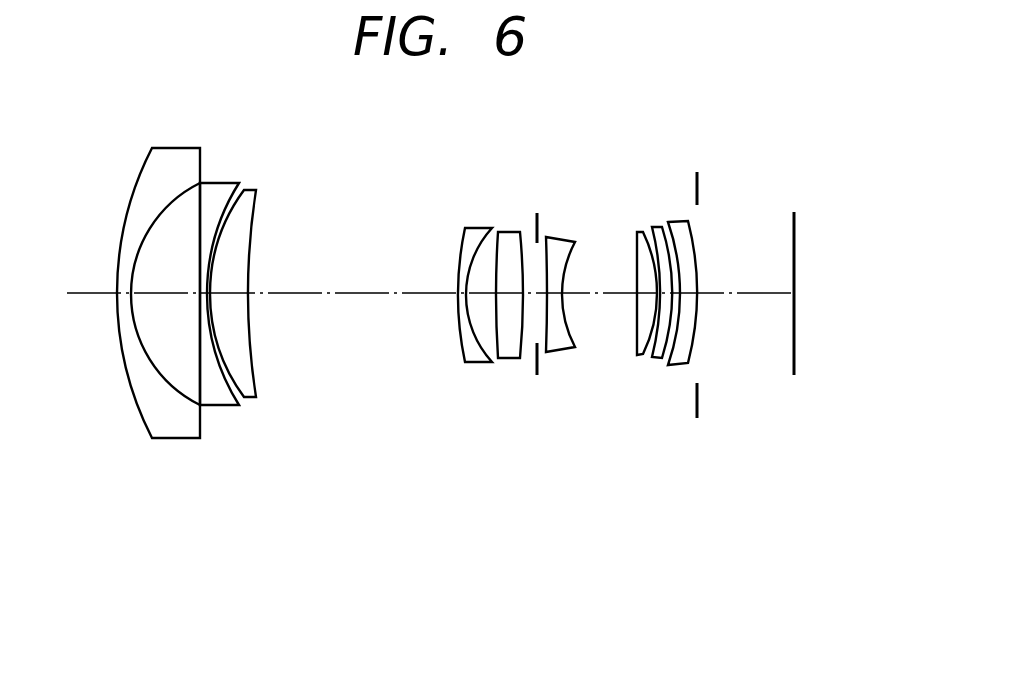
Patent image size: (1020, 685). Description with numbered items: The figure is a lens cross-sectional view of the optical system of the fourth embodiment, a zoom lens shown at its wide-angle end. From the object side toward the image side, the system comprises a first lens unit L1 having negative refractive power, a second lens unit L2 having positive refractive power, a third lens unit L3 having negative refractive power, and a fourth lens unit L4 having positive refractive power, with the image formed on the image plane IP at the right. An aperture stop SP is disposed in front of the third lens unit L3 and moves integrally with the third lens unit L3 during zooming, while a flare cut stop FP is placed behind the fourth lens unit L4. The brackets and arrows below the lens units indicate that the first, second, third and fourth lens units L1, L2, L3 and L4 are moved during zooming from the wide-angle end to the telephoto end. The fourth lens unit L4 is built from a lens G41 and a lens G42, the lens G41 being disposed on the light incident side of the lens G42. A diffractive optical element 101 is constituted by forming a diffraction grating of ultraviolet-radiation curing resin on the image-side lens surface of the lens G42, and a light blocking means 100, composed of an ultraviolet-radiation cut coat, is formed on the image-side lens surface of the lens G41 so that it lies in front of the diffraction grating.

The first lens unit L1 is at (267, 475).
The second lens unit L2 is at (523, 475).
The third lens unit L3 is at (592, 475).
The fourth lens unit L4 is at (628, 341).
The aperture stop SP is at (535, 222).
The flare cut stop FP is at (697, 182).
The image plane IP is at (795, 245).
The lens G41 is at (612, 292).
The lens G42 is at (663, 228).
The light blocking means 100 is at (642, 353).
The diffractive optical element 101 is at (628, 264).